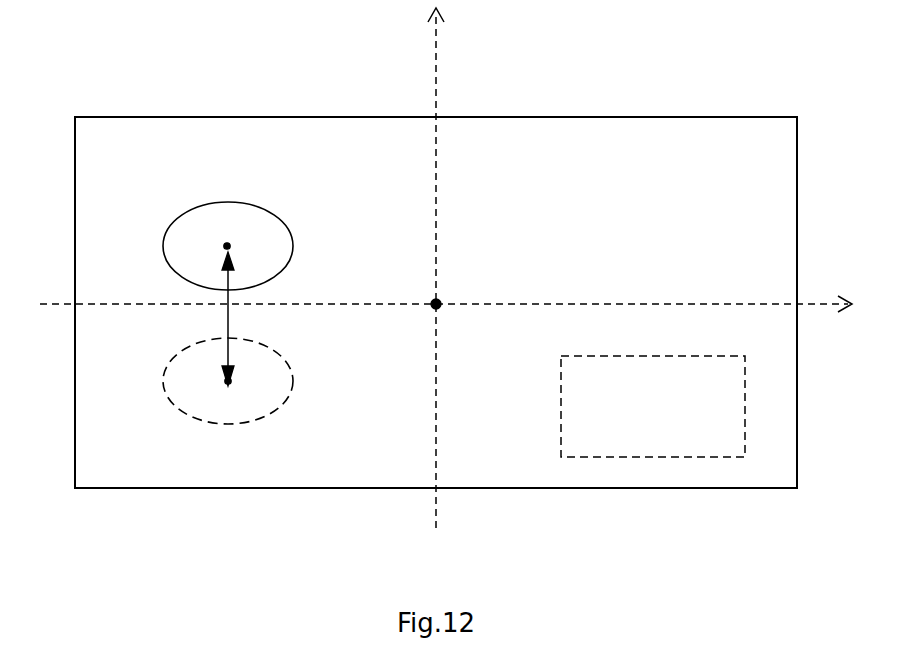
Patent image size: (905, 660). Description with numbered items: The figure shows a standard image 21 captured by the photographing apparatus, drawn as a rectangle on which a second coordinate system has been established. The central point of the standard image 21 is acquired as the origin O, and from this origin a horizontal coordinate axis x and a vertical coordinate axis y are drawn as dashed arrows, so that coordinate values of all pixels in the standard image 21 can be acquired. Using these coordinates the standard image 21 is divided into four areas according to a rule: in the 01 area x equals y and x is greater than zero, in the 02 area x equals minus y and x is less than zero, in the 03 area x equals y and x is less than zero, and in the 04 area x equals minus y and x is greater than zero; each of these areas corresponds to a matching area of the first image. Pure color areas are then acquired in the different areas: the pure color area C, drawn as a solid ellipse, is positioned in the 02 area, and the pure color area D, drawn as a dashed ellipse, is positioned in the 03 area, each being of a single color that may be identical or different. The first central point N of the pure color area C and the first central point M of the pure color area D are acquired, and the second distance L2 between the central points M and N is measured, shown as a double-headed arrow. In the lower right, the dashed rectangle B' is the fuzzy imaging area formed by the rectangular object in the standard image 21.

The area of standard image 01 is at (673, 220).
The area of standard image 02 is at (139, 207).
The area of standard image 03 is at (139, 407).
The area of standard image 04 is at (490, 445).
The standard image 21 is at (614, 117).
The fuzzy imaging area of rectangular object in standard image B' is at (702, 406).
The second pure color area C is at (252, 202).
The second pure color area D is at (208, 422).
The central point of second pure color area C N is at (227, 246).
The central point of second pure color area D M is at (228, 382).
The origin of second coordinate system O is at (436, 304).
The second distance L2 is at (210, 319).
The horizontal coordinate x is at (446, 293).
The vertical coordinate y is at (448, 268).